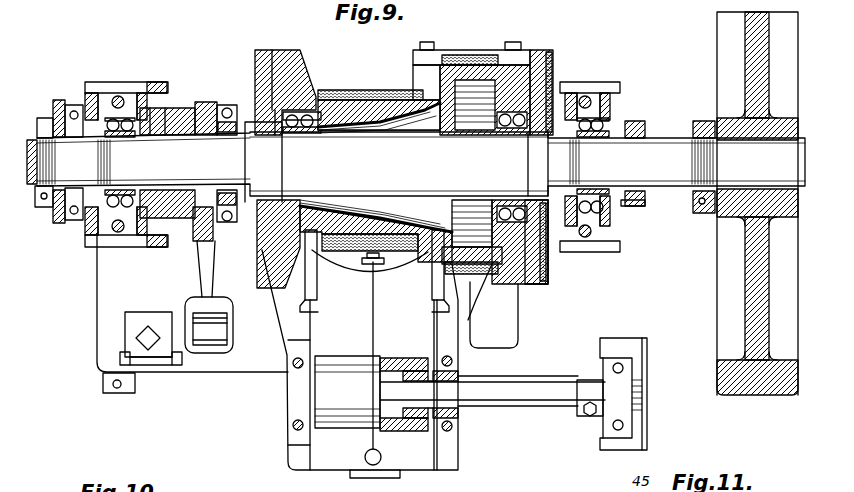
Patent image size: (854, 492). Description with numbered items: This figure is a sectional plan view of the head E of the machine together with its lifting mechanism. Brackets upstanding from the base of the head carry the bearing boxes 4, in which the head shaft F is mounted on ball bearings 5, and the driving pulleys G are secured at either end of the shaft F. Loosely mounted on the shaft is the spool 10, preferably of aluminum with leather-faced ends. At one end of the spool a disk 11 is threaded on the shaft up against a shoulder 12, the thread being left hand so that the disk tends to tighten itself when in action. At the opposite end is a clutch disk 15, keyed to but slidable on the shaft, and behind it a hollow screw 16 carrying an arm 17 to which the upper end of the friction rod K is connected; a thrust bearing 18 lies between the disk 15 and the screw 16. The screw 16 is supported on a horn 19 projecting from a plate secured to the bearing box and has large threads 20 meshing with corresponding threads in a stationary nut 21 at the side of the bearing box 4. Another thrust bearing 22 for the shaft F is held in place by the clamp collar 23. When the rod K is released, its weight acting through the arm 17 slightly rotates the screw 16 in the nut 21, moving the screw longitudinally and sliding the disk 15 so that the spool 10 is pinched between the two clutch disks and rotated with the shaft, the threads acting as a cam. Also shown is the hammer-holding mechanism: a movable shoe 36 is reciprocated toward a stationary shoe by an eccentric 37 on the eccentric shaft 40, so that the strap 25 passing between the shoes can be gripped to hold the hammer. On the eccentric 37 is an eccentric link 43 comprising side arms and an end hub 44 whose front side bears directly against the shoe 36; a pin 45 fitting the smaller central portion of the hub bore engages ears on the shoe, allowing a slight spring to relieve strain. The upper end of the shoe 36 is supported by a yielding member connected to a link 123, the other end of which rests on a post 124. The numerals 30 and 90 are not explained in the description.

The bearing box 4 is at (110, 96).
The ball bearing 5 is at (132, 108).
The spool 10 is at (307, 90).
The disk 11 is at (545, 62).
The shoulder 12 is at (528, 156).
The clutch disk 15 is at (264, 70).
The hollow screw 16 is at (201, 102).
The arm 17 is at (201, 270).
The thrust bearing 18 is at (228, 106).
The horn 19 is at (178, 108).
The large threads 20 is at (181, 222).
The nut 21 is at (186, 108).
The thrust bearing 22 is at (75, 105).
The clamp collar 23 is at (45, 208).
The strap 25 is at (383, 90).
The housing 30 is at (475, 62).
The movable shoe 36 is at (397, 274).
The eccentric 37 is at (420, 430).
The eccentric shaft 40 is at (645, 396).
The eccentric link 43 is at (425, 342).
The end hub 44 is at (448, 270).
The pin 45 is at (527, 286).
The hub 90 is at (630, 206).
The link 123 is at (371, 397).
The post 124 is at (385, 470).
The head E is at (100, 324).
The head shaft F is at (662, 148).
The driving pulley G is at (723, 63).
The friction rod K is at (218, 341).